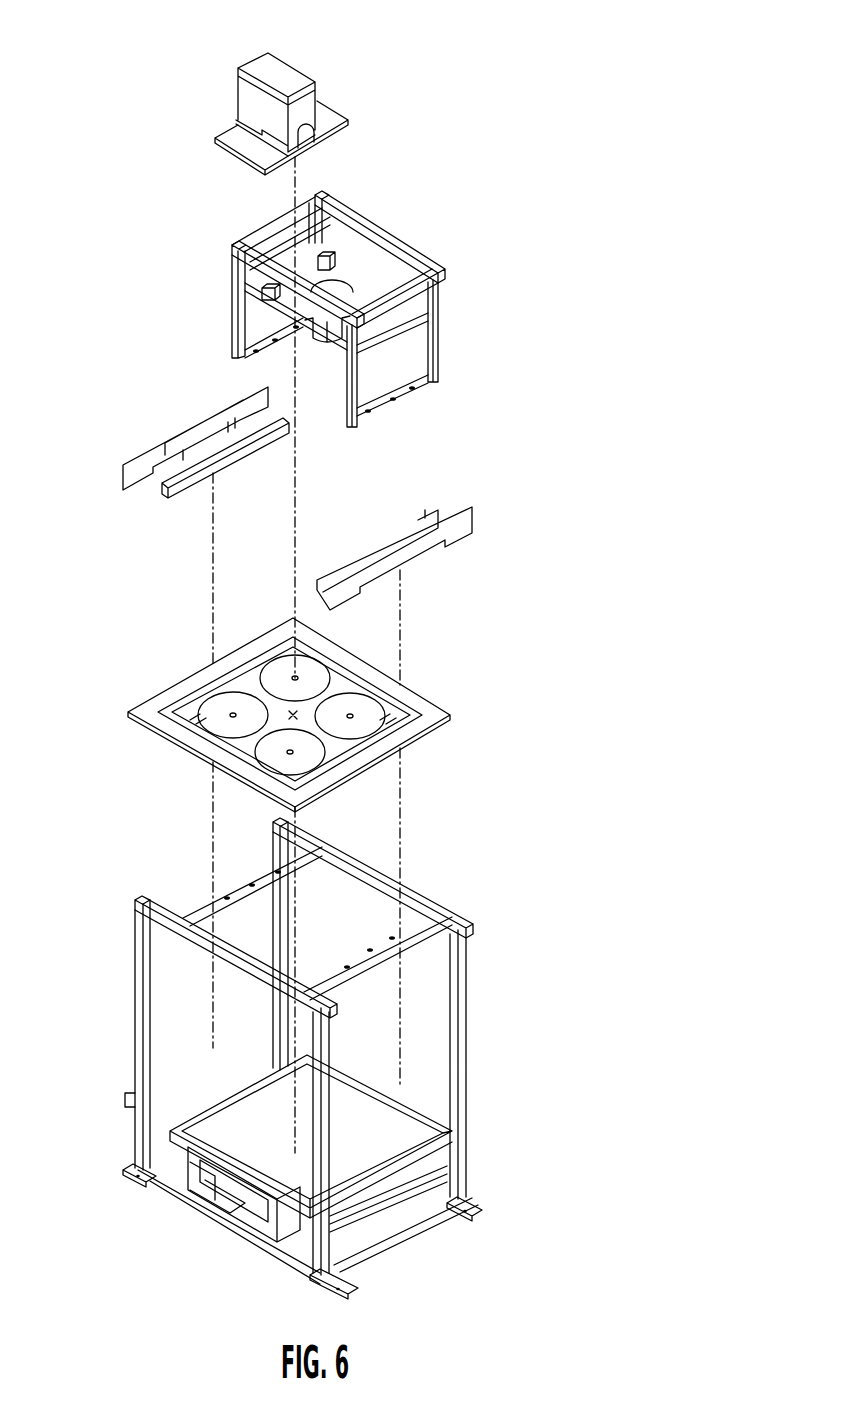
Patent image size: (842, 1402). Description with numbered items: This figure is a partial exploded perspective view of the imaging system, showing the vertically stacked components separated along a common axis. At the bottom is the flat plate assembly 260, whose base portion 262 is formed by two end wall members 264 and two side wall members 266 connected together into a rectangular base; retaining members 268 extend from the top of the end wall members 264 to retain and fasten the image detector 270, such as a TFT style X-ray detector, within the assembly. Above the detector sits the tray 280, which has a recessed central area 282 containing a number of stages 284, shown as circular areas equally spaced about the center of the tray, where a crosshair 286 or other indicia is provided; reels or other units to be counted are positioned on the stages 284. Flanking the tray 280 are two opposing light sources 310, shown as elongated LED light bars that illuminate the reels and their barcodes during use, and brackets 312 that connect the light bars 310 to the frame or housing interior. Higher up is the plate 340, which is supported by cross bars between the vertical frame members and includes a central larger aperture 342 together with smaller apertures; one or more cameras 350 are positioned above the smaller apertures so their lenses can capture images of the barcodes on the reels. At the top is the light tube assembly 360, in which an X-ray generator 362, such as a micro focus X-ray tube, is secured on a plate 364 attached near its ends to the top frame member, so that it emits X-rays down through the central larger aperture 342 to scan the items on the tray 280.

The flat plate assembly 260 is at (298, 1072).
The base portion 262 is at (182, 1170).
The end wall members 264 is at (270, 1240).
The side wall members 266 is at (316, 1222).
The retaining members 268 is at (243, 1183).
The image detector 270 is at (345, 1105).
The tray 280 is at (265, 687).
The recessed central area 282 is at (307, 723).
The stages 284 is at (235, 700).
The crosshair 286 is at (289, 715).
The light sources 310 is at (165, 492).
The brackets 312 is at (193, 433).
The plate 340 is at (324, 306).
The central larger aperture 342 is at (345, 290).
The cameras 350 is at (255, 347).
The light tube assembly 360 is at (244, 87).
The X-ray generator 362 is at (277, 75).
The plate 364 is at (239, 100).